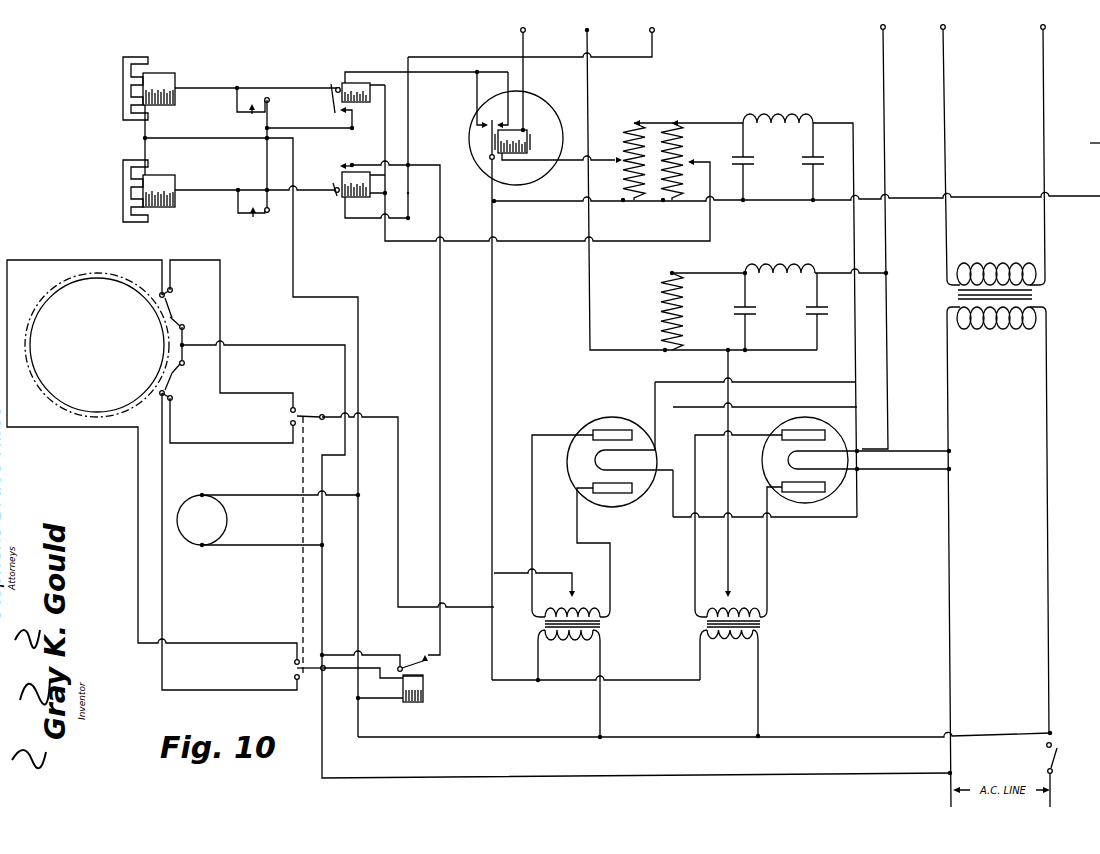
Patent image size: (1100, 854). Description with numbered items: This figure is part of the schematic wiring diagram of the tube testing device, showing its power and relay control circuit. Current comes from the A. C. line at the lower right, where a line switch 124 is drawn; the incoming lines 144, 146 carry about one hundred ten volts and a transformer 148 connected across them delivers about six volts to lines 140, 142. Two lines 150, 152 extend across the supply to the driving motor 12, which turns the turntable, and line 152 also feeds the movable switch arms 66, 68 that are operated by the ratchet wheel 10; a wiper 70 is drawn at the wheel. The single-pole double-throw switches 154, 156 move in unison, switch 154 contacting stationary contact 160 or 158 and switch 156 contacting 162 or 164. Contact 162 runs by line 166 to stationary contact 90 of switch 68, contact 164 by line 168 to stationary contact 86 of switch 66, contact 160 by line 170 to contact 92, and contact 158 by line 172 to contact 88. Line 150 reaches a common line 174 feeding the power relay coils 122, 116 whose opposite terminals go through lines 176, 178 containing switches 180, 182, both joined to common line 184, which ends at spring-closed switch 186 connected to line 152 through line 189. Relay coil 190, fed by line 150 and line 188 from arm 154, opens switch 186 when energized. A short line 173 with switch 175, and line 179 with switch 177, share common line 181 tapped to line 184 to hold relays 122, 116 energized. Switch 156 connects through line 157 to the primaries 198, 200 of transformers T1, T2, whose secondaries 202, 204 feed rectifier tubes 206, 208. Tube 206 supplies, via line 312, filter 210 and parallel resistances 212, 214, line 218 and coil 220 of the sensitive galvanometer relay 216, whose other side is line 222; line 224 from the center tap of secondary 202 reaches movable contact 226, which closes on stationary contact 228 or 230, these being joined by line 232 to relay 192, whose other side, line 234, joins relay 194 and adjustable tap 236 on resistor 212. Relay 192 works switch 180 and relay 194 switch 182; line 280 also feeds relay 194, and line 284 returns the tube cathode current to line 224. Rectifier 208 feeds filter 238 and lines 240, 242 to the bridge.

The ratchet wheel 10 is at (72, 272).
The driving motor 12 is at (190, 540).
The pivoted switch 66 is at (185, 364).
The pivoted switch 68 is at (184, 325).
The wiper arm 70 is at (180, 345).
The stationary contact 86 is at (173, 399).
The stationary contact 88 is at (160, 392).
The stationary contact 90 is at (173, 289).
The stationary contact 92 is at (160, 292).
The relay coil 116 is at (176, 198).
The relay coil 122 is at (172, 75).
The line switch 124 is at (1058, 748).
The line 140 is at (945, 76).
The line 142 is at (1044, 96).
The line 144 is at (1026, 325).
The line 146 is at (953, 362).
The transformer 148 is at (1046, 287).
The line 150 is at (862, 736).
The line 152 is at (283, 344).
The single-pole double-throw switch 154 is at (308, 672).
The single-pole double-throw switch 156 is at (323, 415).
The line 157 is at (399, 512).
The stationary contact 158 is at (294, 677).
The stationary contact 160 is at (294, 661).
The switch contact 162 is at (294, 408).
The switch contact 164 is at (291, 425).
The line 166 is at (222, 305).
The line 168 is at (222, 431).
The line 170 is at (212, 642).
The line 172 is at (182, 689).
The short line 173 is at (237, 101).
The common line 174 is at (132, 122).
The switch 175 is at (265, 96).
The line 176 is at (285, 88).
The switch 177 is at (267, 215).
The line 178 is at (251, 188).
The line 179 is at (238, 213).
The switch 180 is at (331, 106).
The common line 181 is at (288, 128).
The switch 182 is at (333, 182).
The common line 184 is at (352, 163).
The switch 186 is at (404, 667).
The line 188 is at (372, 667).
The line 189 is at (341, 654).
The relay coil 190 is at (424, 690).
The relay 192 is at (356, 82).
The relay coil 194 is at (346, 197).
The primary 198 is at (601, 641).
The primary 200 is at (762, 641).
The secondary 202 is at (606, 606).
The secondary 204 is at (768, 606).
The rectifier tube 206 is at (622, 425).
The rectifier tube 208 is at (831, 430).
The filter system 210 is at (786, 126).
The variable resistance 212 is at (674, 122).
The variable resistance 214 is at (636, 122).
The galvanometer relay 216 is at (545, 106).
The line 218 is at (572, 166).
The coil 220 is at (505, 155).
The line 222 is at (522, 56).
The line 224 is at (496, 392).
The switch contact 226 is at (489, 149).
The stationary contact 228 is at (505, 122).
The stationary contact 230 is at (478, 120).
The line 232 is at (410, 57).
The line 234 is at (409, 128).
The adjustable tap 236 is at (710, 160).
The filter 238 is at (770, 291).
The line 240 is at (884, 72).
The line 242 is at (588, 88).
The line 280 is at (412, 193).
The line 284 is at (1099, 143).
The line 312 is at (796, 382).
The transformer T1 is at (568, 654).
The transformer T2 is at (755, 661).